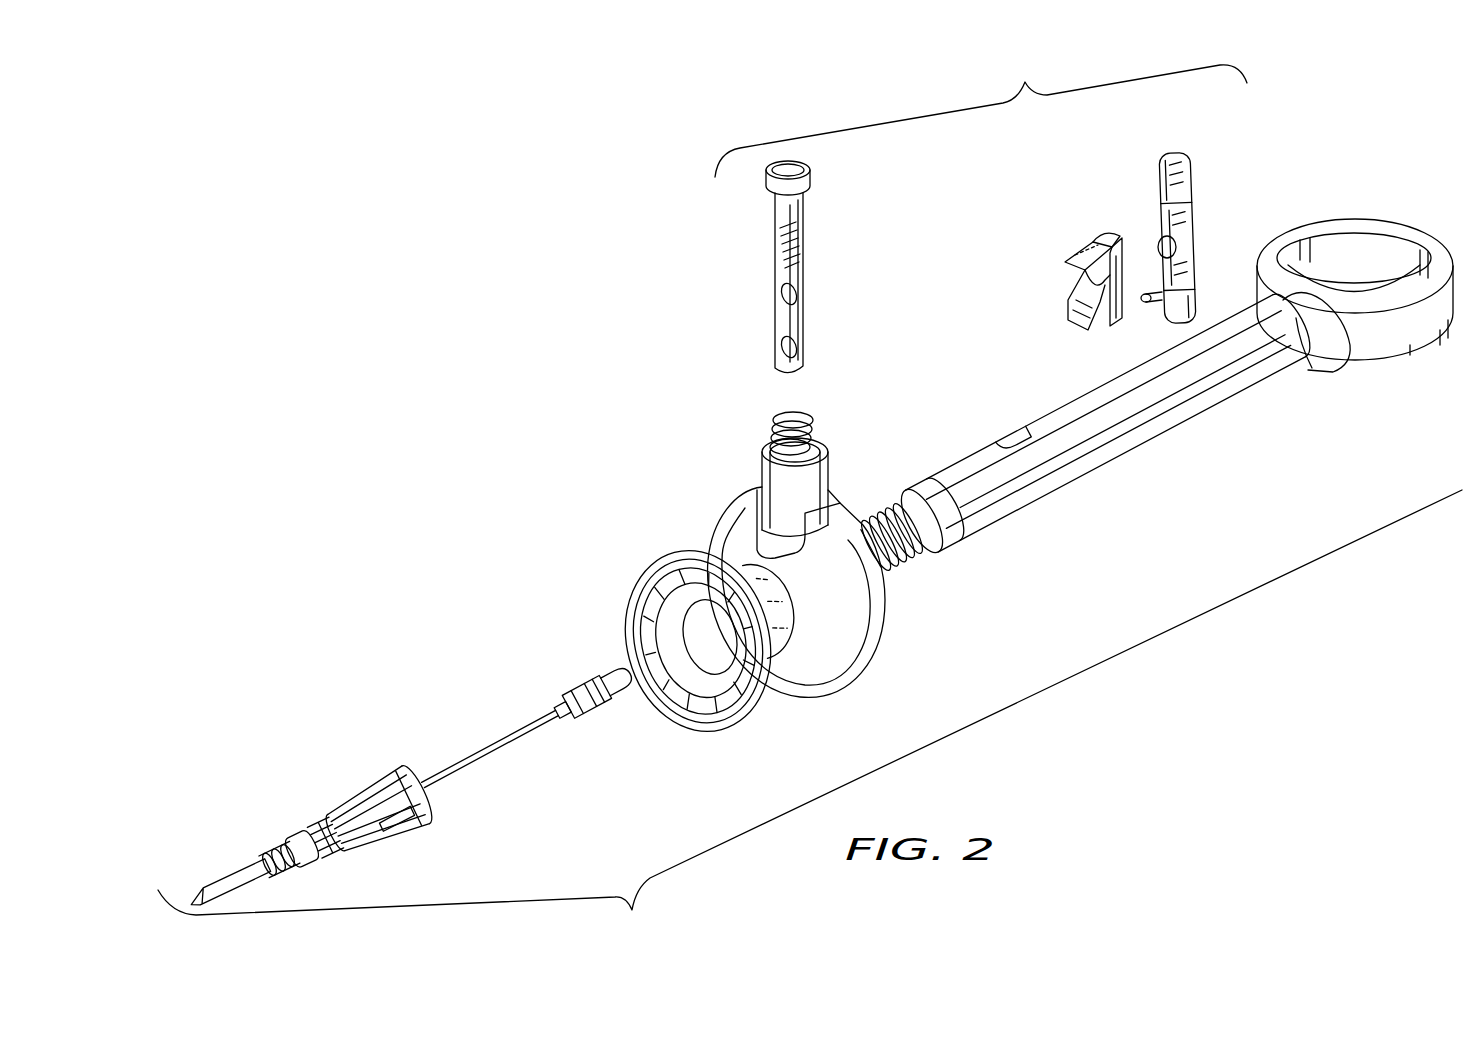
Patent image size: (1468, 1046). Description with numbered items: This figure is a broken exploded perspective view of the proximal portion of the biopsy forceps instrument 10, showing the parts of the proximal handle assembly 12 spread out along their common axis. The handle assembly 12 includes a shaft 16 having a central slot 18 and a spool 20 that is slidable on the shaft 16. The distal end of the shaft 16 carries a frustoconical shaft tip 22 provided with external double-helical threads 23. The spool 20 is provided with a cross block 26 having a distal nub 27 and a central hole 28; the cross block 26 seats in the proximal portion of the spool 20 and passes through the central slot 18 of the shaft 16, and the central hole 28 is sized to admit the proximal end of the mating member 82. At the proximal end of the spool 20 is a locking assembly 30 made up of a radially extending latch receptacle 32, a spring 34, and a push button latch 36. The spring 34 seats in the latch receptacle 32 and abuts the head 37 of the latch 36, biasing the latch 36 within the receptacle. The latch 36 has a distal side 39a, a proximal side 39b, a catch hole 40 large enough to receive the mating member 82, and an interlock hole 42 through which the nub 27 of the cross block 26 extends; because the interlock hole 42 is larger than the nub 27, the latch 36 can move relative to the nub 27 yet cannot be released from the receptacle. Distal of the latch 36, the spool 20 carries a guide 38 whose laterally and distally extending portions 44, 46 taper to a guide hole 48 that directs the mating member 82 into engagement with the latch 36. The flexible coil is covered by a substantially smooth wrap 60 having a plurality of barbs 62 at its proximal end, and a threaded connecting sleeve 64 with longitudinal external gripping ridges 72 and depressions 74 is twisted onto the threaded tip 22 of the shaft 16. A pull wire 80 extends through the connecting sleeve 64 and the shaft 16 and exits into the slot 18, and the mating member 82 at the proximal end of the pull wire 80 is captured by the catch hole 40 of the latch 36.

The biopsy forceps instrument 10 is at (810, 706).
The proximal handle assembly 12 is at (1058, 526).
The shaft 16 is at (1152, 427).
The central slot 18 is at (1050, 415).
The spool 20 is at (862, 658).
The frustoconical shaft tip 22 is at (866, 522).
The external double-helical threads 23 is at (902, 572).
The cross block 26 is at (1200, 225).
The distal nub 27 is at (1160, 300).
The central hole 28 is at (1155, 233).
The locking assembly 30 is at (981, 114).
The latch receptacle 32 is at (765, 450).
The spring 34 is at (775, 422).
The push button latch 36 is at (772, 210).
The head 37 is at (812, 180).
The guide 38 is at (1118, 268).
The distal side 39a is at (786, 265).
The proximal side 39b is at (795, 278).
The catch hole 40 is at (785, 295).
The interlock hole 42 is at (780, 347).
The laterally extending portion 44 is at (1080, 252).
The distally extending portion 46 is at (1080, 315).
The guide hole 48 is at (1092, 283).
The wrap 60 is at (228, 880).
The barbs 62 is at (280, 852).
The threaded connecting sleeve 64 is at (385, 778).
The longitudinal external gripping ridges 72 is at (388, 823).
The depressions 74 is at (425, 795).
The pull wire 80 is at (513, 732).
The mating member 82 is at (600, 675).